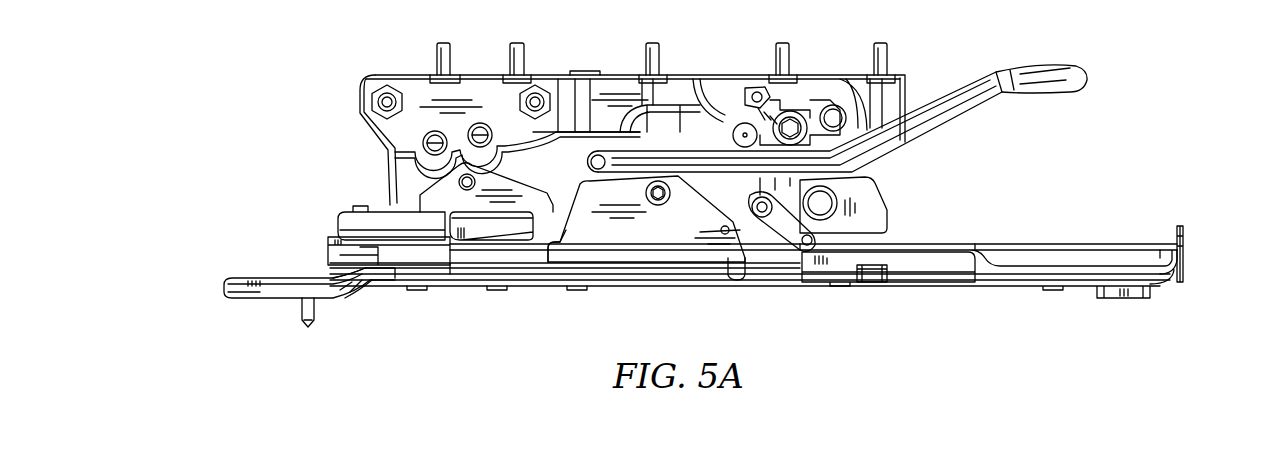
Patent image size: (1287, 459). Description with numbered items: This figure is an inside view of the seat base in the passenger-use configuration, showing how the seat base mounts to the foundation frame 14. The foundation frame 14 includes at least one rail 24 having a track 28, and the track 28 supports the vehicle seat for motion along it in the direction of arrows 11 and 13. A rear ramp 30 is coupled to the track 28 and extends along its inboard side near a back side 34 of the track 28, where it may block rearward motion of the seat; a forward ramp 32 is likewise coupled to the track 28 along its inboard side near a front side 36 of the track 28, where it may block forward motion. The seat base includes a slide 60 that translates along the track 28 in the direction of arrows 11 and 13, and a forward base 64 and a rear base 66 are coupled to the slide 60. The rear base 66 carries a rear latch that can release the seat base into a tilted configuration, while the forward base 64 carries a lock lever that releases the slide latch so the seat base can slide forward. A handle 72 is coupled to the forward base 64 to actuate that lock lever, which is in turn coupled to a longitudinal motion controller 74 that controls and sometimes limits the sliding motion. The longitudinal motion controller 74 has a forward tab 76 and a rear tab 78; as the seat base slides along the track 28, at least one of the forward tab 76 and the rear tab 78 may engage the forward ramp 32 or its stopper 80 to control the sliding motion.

The arrow 11 is at (917, 44).
The arrow 13 is at (915, 68).
The foundation frame 14 is at (950, 296).
The rail 24 is at (1183, 254).
The track 28 is at (1011, 242).
The rear ramp 30 is at (360, 284).
The forward ramp 32 is at (918, 273).
The back side 34 is at (201, 268).
The front side 36 is at (1193, 222).
The slide 60 is at (333, 247).
The forward base 64 is at (874, 200).
The rear base 66 is at (432, 202).
The handle 72 is at (1086, 80).
The longitudinal motion controller 74 is at (647, 232).
The forward tab 76 is at (731, 272).
The rear tab 78 is at (556, 246).
The stopper 80 is at (870, 283).